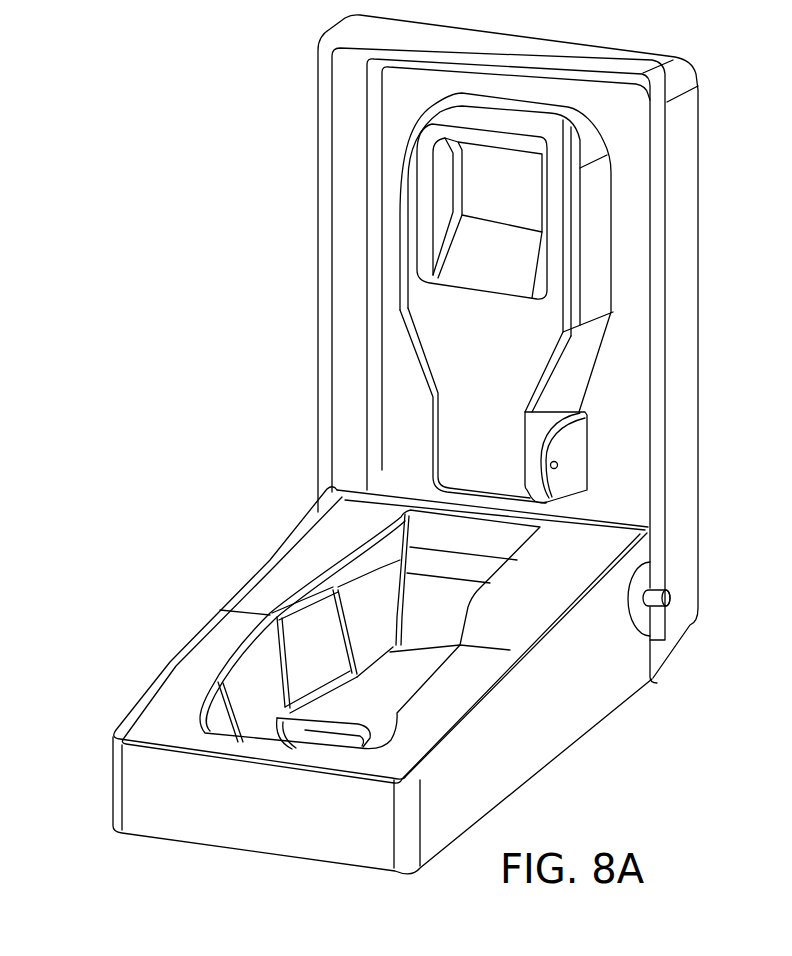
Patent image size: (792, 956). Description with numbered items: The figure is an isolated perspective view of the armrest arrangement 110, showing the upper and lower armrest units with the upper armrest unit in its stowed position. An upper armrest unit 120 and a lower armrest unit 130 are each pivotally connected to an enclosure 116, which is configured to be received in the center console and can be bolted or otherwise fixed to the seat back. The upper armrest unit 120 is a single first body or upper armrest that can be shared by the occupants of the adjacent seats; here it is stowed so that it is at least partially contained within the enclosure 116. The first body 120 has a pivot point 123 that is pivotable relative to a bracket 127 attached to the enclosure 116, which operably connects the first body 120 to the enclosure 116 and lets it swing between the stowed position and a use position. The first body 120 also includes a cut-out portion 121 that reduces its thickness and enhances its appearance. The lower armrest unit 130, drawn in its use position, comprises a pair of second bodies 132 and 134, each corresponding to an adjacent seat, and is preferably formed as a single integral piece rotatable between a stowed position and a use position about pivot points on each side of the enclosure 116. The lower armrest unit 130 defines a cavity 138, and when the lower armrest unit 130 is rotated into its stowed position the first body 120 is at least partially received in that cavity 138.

The armrest arrangement 110 is at (240, 403).
The enclosure 116 is at (683, 126).
The upper armrest unit 120 is at (596, 304).
The cut-out portion 121 is at (511, 269).
The pivot point 123 is at (558, 467).
The bracket 127 is at (567, 447).
The lower armrest unit 130 is at (615, 712).
The second body 132 is at (180, 667).
The second body 134 is at (443, 700).
The cavity 138 is at (323, 643).